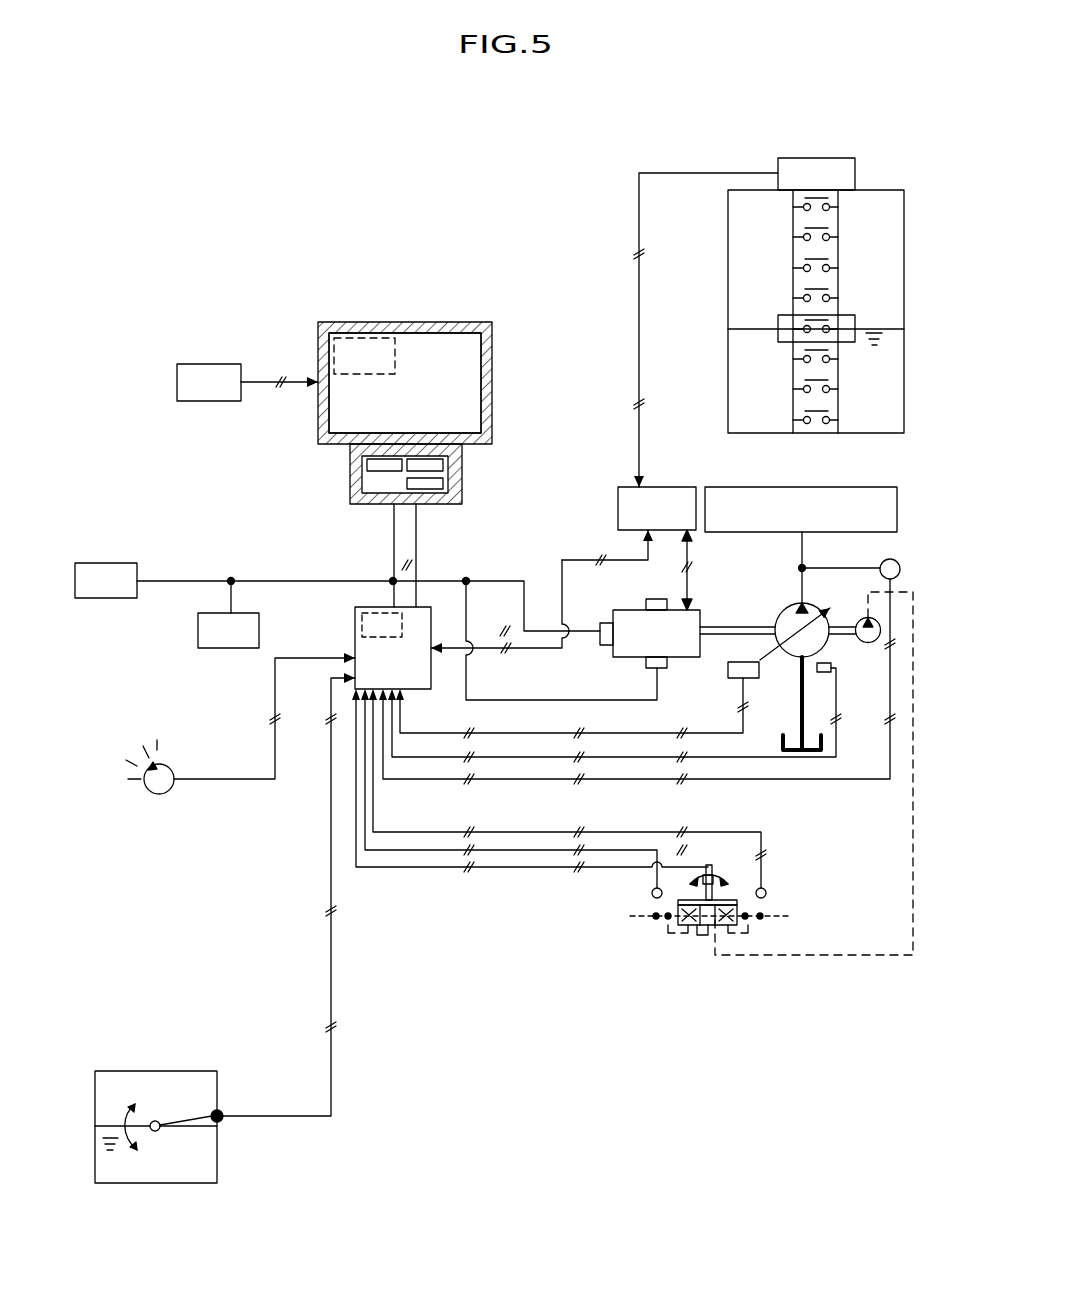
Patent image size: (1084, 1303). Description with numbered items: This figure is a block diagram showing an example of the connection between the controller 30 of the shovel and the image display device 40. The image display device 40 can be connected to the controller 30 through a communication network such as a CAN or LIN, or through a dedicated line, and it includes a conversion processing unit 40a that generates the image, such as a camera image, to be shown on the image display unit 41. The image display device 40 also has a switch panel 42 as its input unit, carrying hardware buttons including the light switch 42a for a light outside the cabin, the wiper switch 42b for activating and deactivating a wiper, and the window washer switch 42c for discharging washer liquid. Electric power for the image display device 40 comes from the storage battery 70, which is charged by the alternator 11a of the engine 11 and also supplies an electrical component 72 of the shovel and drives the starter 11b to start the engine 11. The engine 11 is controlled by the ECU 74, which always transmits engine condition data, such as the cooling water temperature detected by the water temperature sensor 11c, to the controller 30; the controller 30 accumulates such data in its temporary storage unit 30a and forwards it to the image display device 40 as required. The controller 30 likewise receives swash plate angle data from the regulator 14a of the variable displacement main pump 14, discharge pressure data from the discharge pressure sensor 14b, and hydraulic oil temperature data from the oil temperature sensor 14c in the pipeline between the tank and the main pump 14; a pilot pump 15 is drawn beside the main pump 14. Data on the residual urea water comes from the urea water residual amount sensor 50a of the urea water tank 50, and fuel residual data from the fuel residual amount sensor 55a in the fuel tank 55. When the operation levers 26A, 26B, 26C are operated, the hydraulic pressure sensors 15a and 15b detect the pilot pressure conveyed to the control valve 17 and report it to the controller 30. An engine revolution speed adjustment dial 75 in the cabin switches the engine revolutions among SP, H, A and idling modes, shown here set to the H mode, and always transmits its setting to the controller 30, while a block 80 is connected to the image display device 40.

The engine 11 is at (638, 634).
The alternator 11a is at (667, 668).
The starter 11b is at (602, 645).
The water temperature sensor 11c is at (652, 599).
The main pump 14 is at (837, 638).
The regulator 14a is at (757, 678).
The discharge pressure sensor 14b is at (897, 562).
The oil temperature sensor 14c is at (826, 667).
The pilot pump 15 is at (870, 657).
The hydraulic pressure sensor 15a is at (766, 893).
The hydraulic pressure sensor 15b is at (652, 893).
The control valve 17 is at (841, 487).
The operation lever 26A is at (749, 893).
The operation lever 26B is at (749, 893).
The operation lever 26C is at (749, 893).
The controller 30 is at (359, 646).
The temporary storage unit 30a is at (362, 624).
The image display device 40 is at (408, 373).
The conversion processing unit 40a is at (362, 338).
The image display unit 41 is at (423, 365).
The switch panel 42 is at (408, 394).
The light switch 42a is at (443, 465).
The wiper switch 42b is at (443, 485).
The window washer switch 42c is at (367, 465).
The urea water tank 50 is at (816, 266).
The urea water residual amount sensor 50a is at (813, 158).
The fuel tank 55 is at (225, 930).
The fuel residual amount sensor 55a is at (222, 1122).
The storage battery 70 is at (231, 648).
The electrical component 72 is at (107, 598).
The engine control unit 74 is at (655, 487).
The engine revolution speed adjustment dial 75 is at (172, 770).
The camera 80 is at (207, 402).